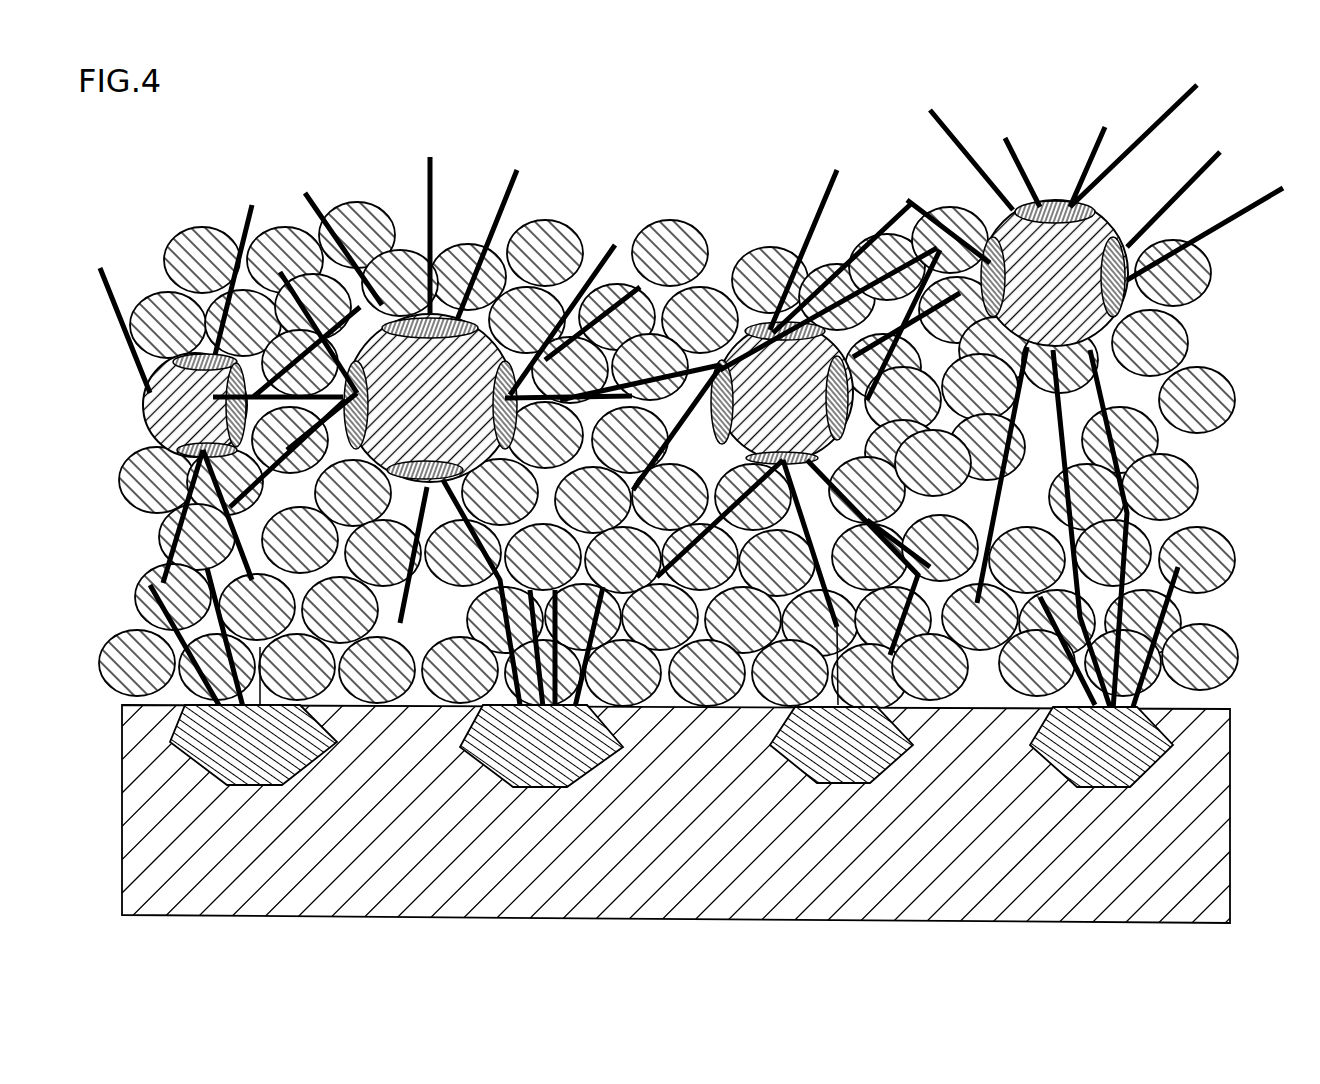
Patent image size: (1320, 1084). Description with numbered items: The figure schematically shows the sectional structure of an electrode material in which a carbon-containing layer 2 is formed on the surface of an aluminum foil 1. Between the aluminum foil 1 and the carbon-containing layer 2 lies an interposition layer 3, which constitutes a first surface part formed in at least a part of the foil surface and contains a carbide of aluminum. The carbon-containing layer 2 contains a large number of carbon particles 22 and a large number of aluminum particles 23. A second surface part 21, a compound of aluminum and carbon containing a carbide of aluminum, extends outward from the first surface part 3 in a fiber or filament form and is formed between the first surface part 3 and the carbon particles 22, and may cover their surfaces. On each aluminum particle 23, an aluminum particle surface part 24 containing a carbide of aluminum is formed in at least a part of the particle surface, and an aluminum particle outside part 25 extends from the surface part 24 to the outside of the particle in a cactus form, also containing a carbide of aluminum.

The aluminum foil 1 is at (1215, 818).
The carbon-containing layer 2 is at (698, 397).
The interposition layer 3 is at (1155, 737).
The second surface part 21 is at (152, 622).
The carbon particles 22 is at (1207, 427).
The aluminum particles 23 is at (635, 314).
The aluminum particle surface part 24 is at (1040, 207).
The aluminum particle outside part 25 is at (113, 287).